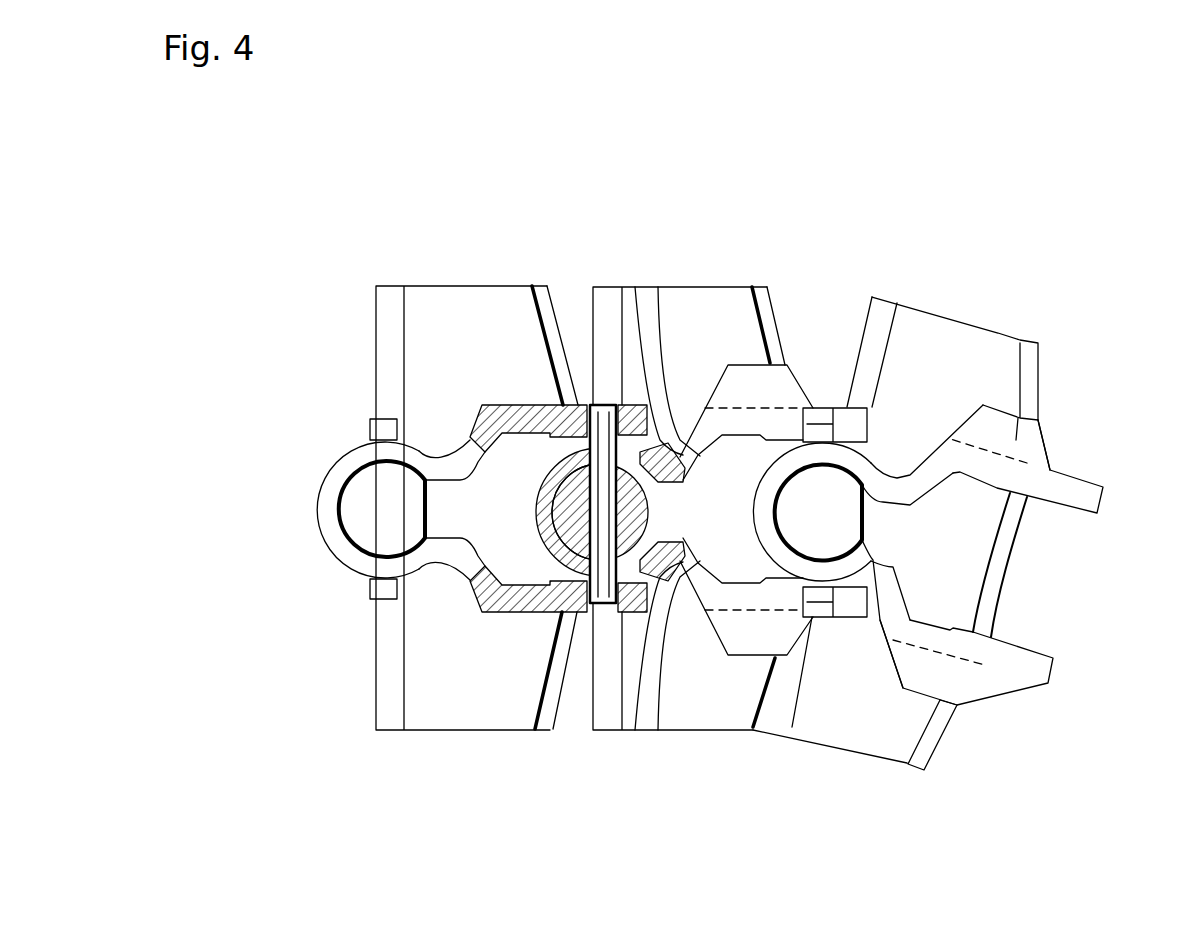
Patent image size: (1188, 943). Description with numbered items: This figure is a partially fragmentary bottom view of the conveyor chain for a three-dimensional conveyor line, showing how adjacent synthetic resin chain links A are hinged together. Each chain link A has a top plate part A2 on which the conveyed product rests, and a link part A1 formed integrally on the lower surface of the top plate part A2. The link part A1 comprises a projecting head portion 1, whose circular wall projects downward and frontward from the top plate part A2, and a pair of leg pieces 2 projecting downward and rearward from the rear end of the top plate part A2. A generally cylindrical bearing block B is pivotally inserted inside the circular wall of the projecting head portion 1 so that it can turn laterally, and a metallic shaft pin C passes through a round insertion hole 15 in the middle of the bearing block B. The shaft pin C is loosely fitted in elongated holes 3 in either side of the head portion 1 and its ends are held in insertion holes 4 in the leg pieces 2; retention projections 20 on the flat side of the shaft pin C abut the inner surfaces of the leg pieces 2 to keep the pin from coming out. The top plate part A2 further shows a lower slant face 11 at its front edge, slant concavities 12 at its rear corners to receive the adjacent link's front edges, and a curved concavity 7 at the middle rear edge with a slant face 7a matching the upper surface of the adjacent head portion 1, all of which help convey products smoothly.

The projecting head portion 1 is at (335, 490).
The leg pieces 2 is at (520, 413).
The elongated hole 3 is at (663, 440).
The insertion hole 4 is at (603, 430).
The curved concavity 7 is at (993, 598).
The slant face 7a is at (990, 557).
The lower slant face 11 is at (390, 680).
The slant concavity 12 is at (553, 693).
The round insertion hole 15 is at (683, 462).
The retention projections 20 is at (630, 460).
The chain link A is at (432, 287).
The link part A1 is at (462, 480).
The top plate part A2 is at (475, 317).
The bearing block B is at (540, 478).
The shaft pin C is at (592, 405).